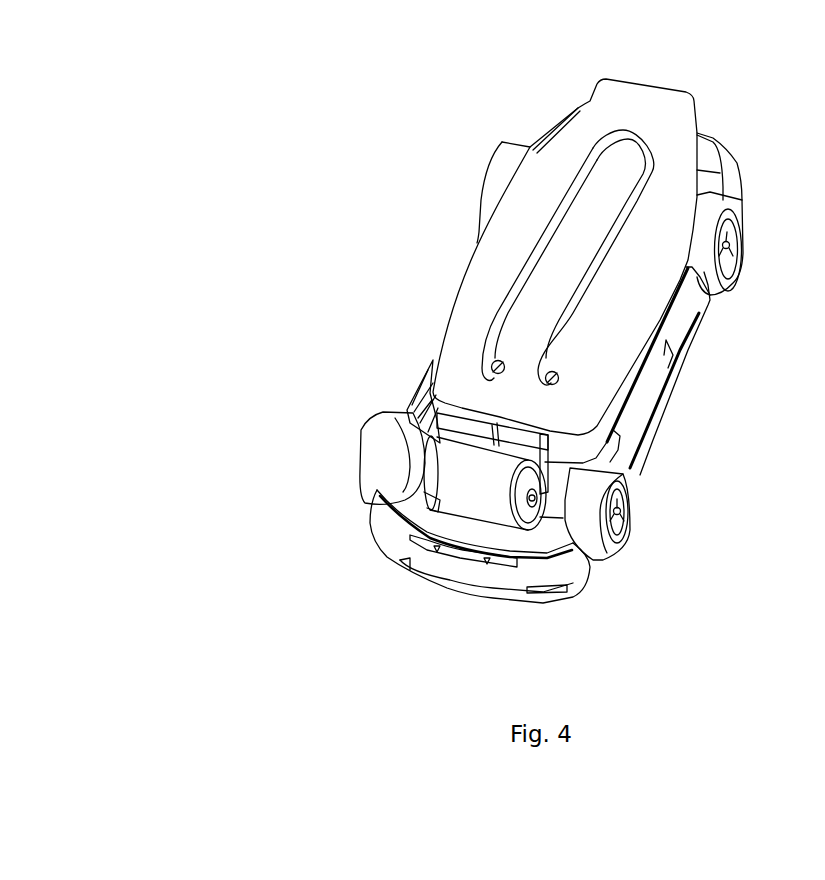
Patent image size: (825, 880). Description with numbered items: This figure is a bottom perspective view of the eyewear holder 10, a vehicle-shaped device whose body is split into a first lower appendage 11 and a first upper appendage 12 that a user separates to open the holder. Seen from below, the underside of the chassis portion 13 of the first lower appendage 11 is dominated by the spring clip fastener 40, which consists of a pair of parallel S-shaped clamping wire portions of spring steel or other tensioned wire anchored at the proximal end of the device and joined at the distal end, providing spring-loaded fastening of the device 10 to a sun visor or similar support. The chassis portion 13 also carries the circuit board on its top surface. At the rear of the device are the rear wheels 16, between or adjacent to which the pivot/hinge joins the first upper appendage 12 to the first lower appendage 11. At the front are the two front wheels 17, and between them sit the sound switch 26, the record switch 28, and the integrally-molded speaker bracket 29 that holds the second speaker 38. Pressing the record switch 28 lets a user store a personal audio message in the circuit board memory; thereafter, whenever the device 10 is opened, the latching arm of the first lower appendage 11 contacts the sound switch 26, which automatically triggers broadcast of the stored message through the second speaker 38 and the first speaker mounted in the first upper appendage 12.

The eyewear holder 10 is at (133, 130).
The first lower appendage 11 is at (394, 584).
The first upper appendage 12 is at (729, 126).
The chassis portion 13 is at (627, 93).
The rear wheels 16 is at (495, 177).
The front wheels 17 is at (387, 458).
The sound switch 26 is at (427, 392).
The record switch 28 is at (532, 510).
The speaker bracket 29 is at (482, 480).
The second speaker 38 is at (427, 493).
The spring clip fastener 40 is at (558, 315).